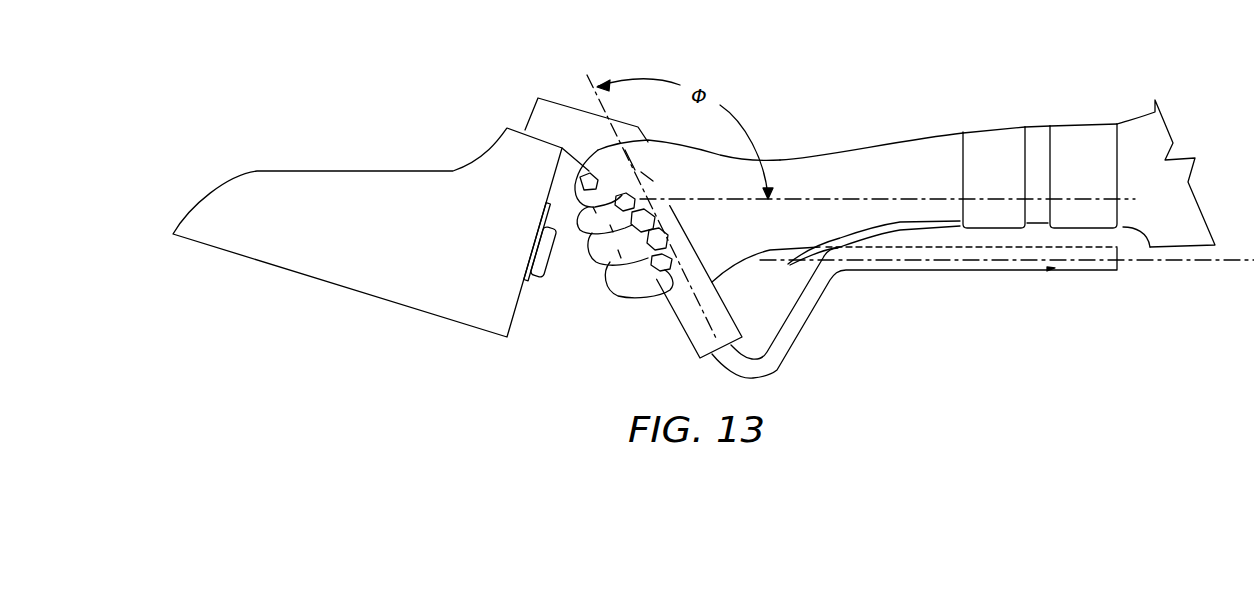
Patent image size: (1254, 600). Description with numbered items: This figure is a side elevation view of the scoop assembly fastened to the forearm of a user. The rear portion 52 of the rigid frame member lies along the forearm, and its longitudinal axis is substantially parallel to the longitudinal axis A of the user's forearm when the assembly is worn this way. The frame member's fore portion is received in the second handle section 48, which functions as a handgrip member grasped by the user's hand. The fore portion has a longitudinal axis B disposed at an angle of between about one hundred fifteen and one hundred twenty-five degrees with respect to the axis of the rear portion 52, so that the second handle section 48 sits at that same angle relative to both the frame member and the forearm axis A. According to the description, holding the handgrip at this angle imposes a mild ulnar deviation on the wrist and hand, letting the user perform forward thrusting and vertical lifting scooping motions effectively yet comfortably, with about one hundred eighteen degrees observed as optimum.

The second handle section 48 is at (683, 300).
The rear portion 52 is at (1017, 266).
The longitudinal axis A is at (892, 198).
The longitudinal axis B is at (575, 50).